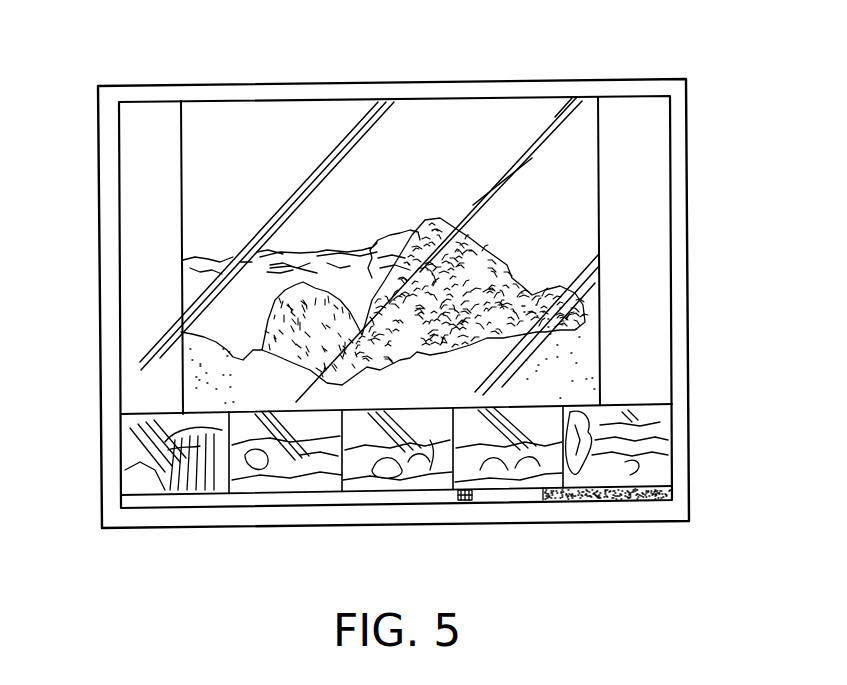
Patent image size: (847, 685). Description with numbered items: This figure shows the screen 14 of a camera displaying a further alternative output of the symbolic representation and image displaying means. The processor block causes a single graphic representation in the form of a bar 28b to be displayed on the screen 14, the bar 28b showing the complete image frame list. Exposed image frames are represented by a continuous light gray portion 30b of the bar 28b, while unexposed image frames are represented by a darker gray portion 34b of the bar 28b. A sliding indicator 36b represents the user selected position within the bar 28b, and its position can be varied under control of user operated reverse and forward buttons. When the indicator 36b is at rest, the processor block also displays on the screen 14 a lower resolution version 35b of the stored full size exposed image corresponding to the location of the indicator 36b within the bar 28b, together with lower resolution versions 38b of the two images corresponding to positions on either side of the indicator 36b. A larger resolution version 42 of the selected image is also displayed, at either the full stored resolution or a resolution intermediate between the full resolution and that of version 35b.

The screen 14 is at (708, 362).
The larger resolution version 42 is at (528, 117).
The bar 28b is at (372, 502).
The light gray portion 30b is at (198, 500).
The darker gray portion 34b is at (672, 491).
The lower resolution version 35b is at (432, 458).
The sliding indicator 36b is at (463, 493).
The lower resolution versions 38b is at (162, 463).